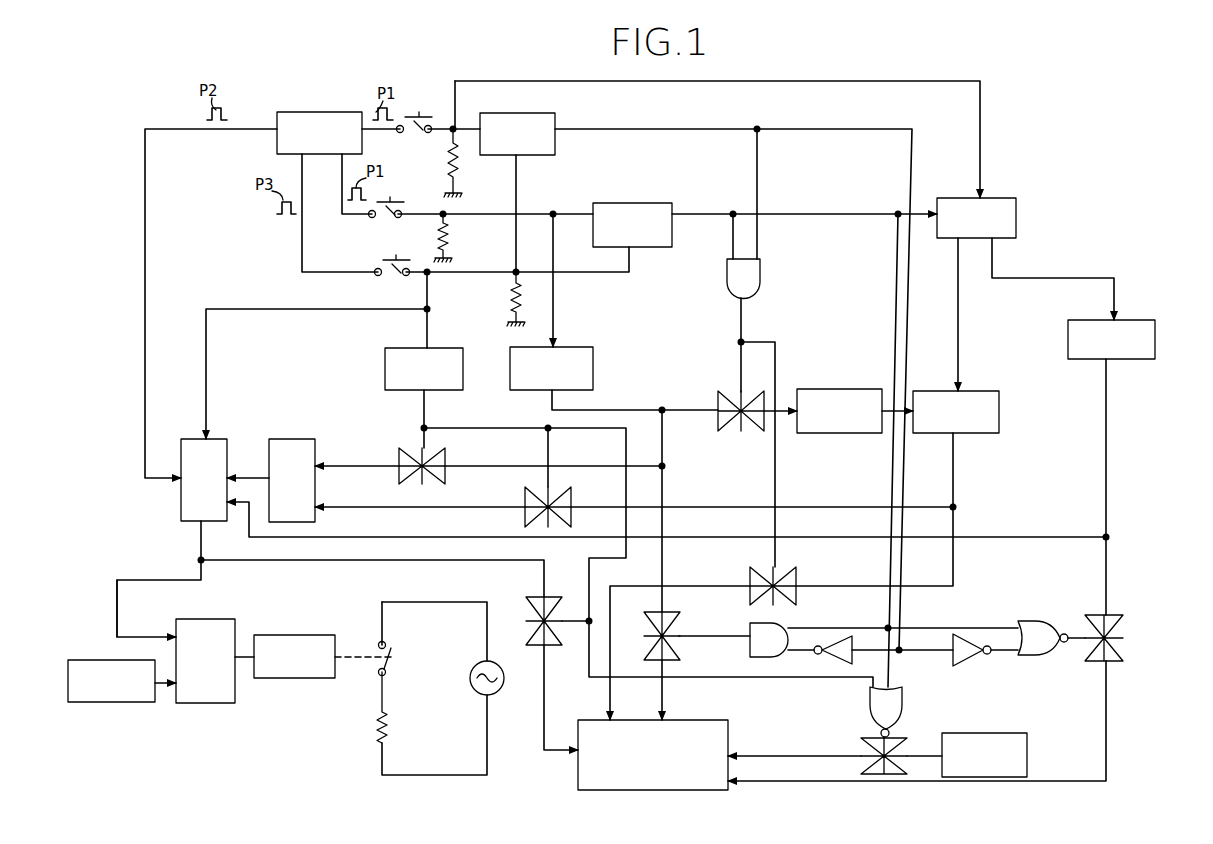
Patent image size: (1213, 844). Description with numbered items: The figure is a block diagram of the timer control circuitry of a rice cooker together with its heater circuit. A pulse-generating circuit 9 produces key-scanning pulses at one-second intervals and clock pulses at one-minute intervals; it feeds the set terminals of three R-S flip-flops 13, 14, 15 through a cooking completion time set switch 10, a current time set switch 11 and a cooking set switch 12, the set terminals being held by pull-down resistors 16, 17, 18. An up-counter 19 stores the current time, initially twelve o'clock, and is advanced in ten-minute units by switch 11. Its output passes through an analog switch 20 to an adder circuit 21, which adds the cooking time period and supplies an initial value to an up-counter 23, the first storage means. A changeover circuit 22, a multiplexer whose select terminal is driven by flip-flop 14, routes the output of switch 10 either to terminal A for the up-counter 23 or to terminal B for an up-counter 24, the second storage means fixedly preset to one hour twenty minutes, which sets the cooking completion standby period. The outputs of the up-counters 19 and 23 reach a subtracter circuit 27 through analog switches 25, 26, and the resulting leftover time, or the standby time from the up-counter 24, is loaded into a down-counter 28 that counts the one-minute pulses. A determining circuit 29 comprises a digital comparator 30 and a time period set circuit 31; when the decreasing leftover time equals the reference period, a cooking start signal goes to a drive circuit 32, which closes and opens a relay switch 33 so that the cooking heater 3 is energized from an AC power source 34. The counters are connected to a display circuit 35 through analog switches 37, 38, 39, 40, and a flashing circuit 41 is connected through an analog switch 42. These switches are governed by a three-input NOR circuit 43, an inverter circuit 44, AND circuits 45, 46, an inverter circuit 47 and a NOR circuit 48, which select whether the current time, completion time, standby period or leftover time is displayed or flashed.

The cooking heater 3 is at (389, 730).
The pulse-generating circuit 9 is at (280, 112).
The cooking completion time set switch 10 is at (418, 134).
The current time set switch 11 is at (386, 220).
The cooking set switch 12 is at (391, 278).
The R-S flip-flop 13 is at (530, 113).
The R-S flip-flop 14 is at (617, 203).
The R-S flip-flop 15 is at (385, 366).
The pull-down resistor 16 is at (463, 167).
The pull-down resistor 17 is at (452, 234).
The pull-down resistor 18 is at (508, 298).
The up-counter 19 is at (593, 362).
The analog switch 20 is at (718, 395).
The adder circuit 21 is at (832, 389).
The changeover circuit 22 is at (1005, 198).
The up-counter 23 is at (999, 410).
The up-counter 24 is at (1148, 320).
The analog switch 25 is at (399, 452).
The analog switch 26 is at (525, 492).
The subtracter circuit 27 is at (281, 439).
The down-counter 28 is at (210, 439).
The determining circuit 29 is at (148, 611).
The digital comparator 30 is at (202, 703).
The time period set circuit 31 is at (94, 702).
The drive circuit 32 is at (290, 678).
The relay switch 33 is at (387, 642).
The AC power source 34 is at (472, 690).
The display circuit 35 is at (578, 773).
The analog switch 37 is at (680, 612).
The analog switch 38 is at (796, 572).
The analog switch 39 is at (1112, 616).
The analog switch 40 is at (528, 599).
The flashing circuit 41 is at (1027, 738).
The analog switch 42 is at (861, 742).
The 3-input NOR circuit 43 is at (870, 696).
The inverter circuit 44 is at (822, 658).
The AND circuit 45 is at (752, 655).
The AND circuit 46 is at (761, 273).
The inverter circuit 47 is at (966, 666).
The NOR circuit 48 is at (1036, 655).